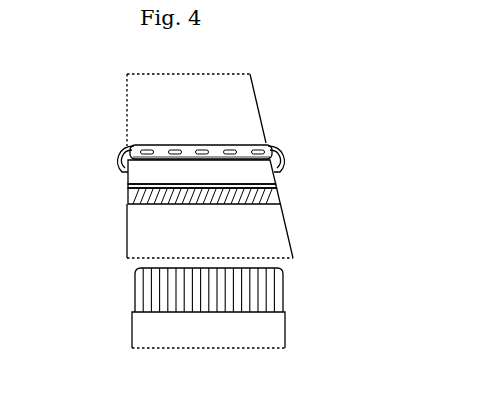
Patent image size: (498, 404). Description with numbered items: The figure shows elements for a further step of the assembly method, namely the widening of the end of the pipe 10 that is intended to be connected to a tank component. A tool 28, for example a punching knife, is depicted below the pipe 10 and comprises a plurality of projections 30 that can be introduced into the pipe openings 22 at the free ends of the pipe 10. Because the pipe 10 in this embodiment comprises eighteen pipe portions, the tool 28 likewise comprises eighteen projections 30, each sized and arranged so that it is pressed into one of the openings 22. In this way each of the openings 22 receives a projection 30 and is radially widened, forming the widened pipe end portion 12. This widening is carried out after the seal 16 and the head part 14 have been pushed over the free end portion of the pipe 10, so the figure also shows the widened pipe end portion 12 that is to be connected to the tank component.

The pipe 10 is at (138, 113).
The widened pipe end portion 12 is at (206, 184).
The head part 14 is at (120, 153).
The seal 16 is at (122, 169).
The pipe openings 22 is at (127, 193).
The tool 28 is at (128, 236).
The projections 30 is at (130, 211).